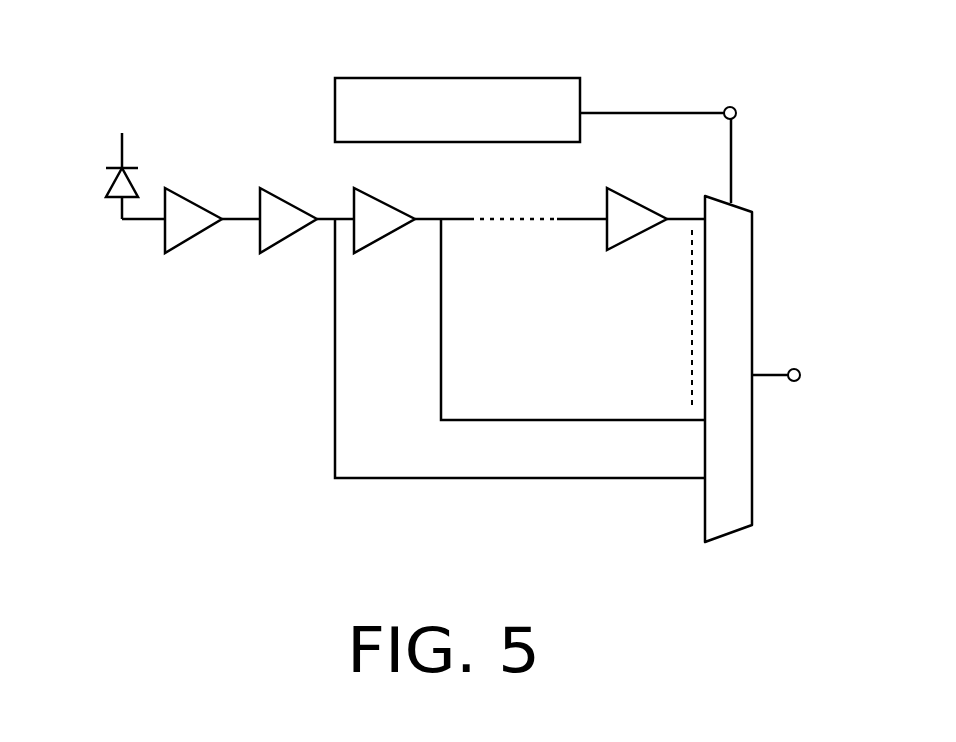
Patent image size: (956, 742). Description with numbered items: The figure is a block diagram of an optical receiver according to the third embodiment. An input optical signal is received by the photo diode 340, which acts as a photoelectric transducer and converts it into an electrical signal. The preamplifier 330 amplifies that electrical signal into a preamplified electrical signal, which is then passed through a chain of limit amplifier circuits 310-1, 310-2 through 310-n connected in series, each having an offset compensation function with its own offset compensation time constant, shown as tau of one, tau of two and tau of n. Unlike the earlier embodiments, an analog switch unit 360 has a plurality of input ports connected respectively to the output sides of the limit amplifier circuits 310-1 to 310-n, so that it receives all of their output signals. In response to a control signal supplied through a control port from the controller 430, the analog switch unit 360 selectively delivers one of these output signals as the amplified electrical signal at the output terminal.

The photo diode 340 is at (106, 197).
The preamplifier 330 is at (200, 237).
The limit amplifier circuit 310-1 is at (295, 238).
The limit amplifier circuit 310-2 is at (390, 237).
The limit amplifier circuit 310-n is at (640, 240).
The controller 430 is at (470, 78).
The analog switch unit 360 is at (735, 531).